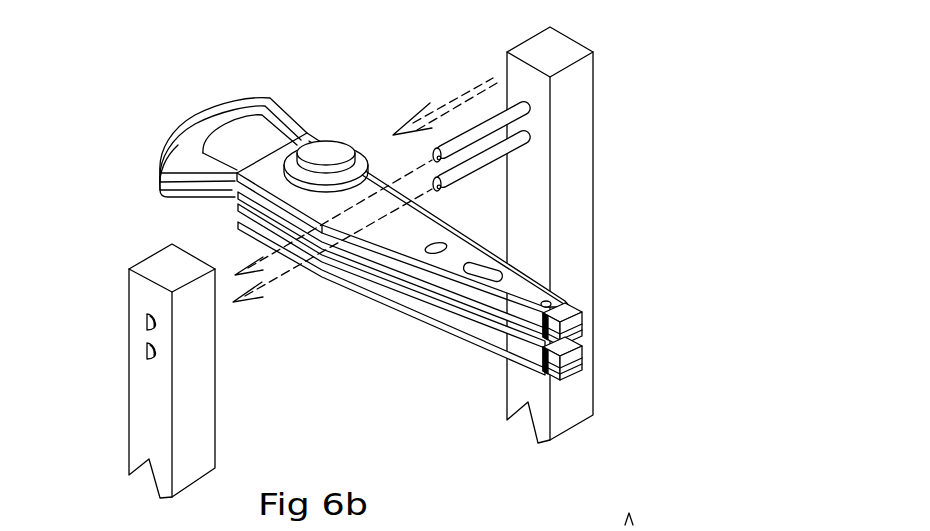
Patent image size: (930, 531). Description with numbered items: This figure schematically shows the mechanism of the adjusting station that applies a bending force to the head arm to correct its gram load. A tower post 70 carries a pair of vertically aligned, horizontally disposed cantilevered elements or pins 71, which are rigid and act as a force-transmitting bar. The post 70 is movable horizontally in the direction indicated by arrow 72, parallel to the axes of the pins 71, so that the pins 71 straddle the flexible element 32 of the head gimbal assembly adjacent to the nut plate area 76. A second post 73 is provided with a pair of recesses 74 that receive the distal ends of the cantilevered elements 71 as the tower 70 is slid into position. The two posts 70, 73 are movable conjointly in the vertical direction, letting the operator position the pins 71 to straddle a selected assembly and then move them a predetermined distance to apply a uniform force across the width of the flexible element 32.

The tower post 70 is at (580, 127).
The cantilevered elements 71 is at (481, 133).
The arrow 72 is at (471, 87).
The second post 73 is at (195, 415).
The recesses 74 is at (146, 353).
The nut plate area 76 is at (320, 133).
The flexible element 32 is at (465, 248).